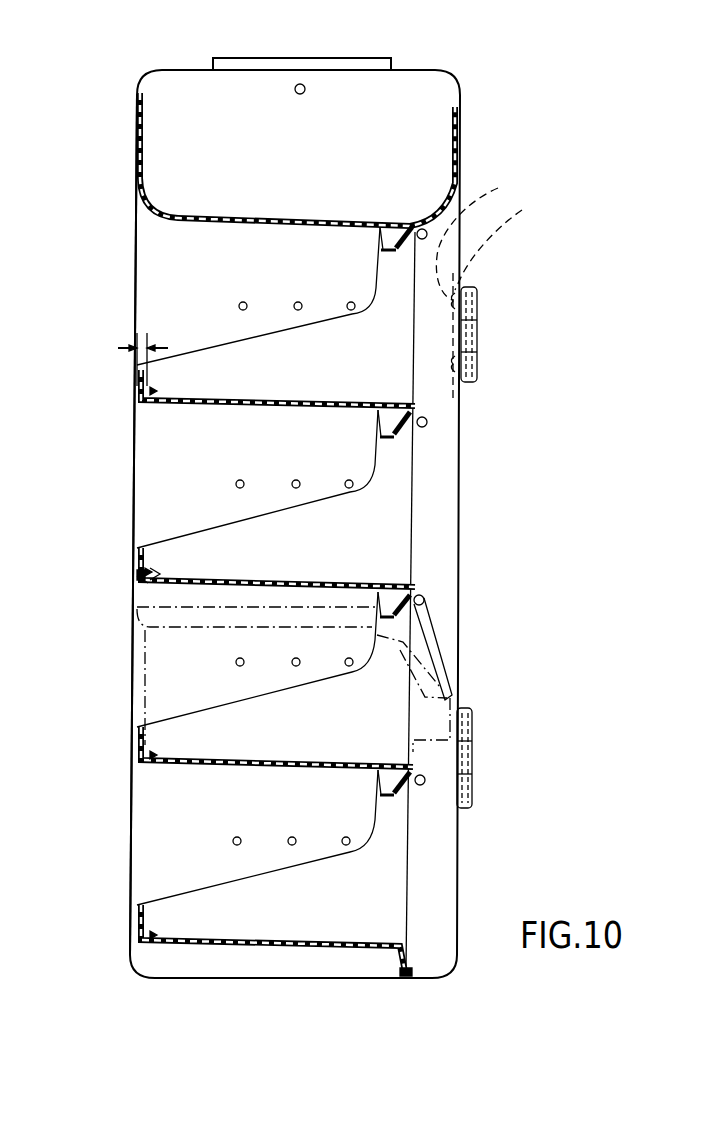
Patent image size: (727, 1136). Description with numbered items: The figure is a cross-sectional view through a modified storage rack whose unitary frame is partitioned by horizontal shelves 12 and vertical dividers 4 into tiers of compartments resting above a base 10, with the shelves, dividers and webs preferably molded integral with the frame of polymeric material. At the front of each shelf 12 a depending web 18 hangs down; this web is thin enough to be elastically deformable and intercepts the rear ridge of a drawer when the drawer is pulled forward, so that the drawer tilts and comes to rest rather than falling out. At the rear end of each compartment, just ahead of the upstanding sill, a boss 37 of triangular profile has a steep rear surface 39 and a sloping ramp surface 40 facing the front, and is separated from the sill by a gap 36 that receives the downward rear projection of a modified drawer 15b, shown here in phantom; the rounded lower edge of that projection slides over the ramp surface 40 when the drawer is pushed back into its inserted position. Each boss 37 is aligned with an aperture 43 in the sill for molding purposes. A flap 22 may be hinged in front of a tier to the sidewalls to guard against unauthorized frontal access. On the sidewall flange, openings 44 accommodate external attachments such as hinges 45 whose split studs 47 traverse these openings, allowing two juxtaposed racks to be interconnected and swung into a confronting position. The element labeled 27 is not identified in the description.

The top plate 27 is at (383, 58).
The vertical divider 4 is at (272, 335).
The gap 36 is at (148, 333).
The boss 37 is at (157, 391).
The horizontal shelf 12 is at (322, 400).
The depending web 18 is at (420, 440).
The steep rear surface 39 is at (150, 573).
The sloping ramp surface 40 is at (152, 572).
The aperture 43 is at (137, 577).
The modified drawer 15b is at (168, 656).
The flap 22 is at (433, 625).
The opening 44 is at (501, 300).
The split stud 47 is at (479, 236).
The hinge 45 is at (477, 305).
The base 10 is at (256, 940).